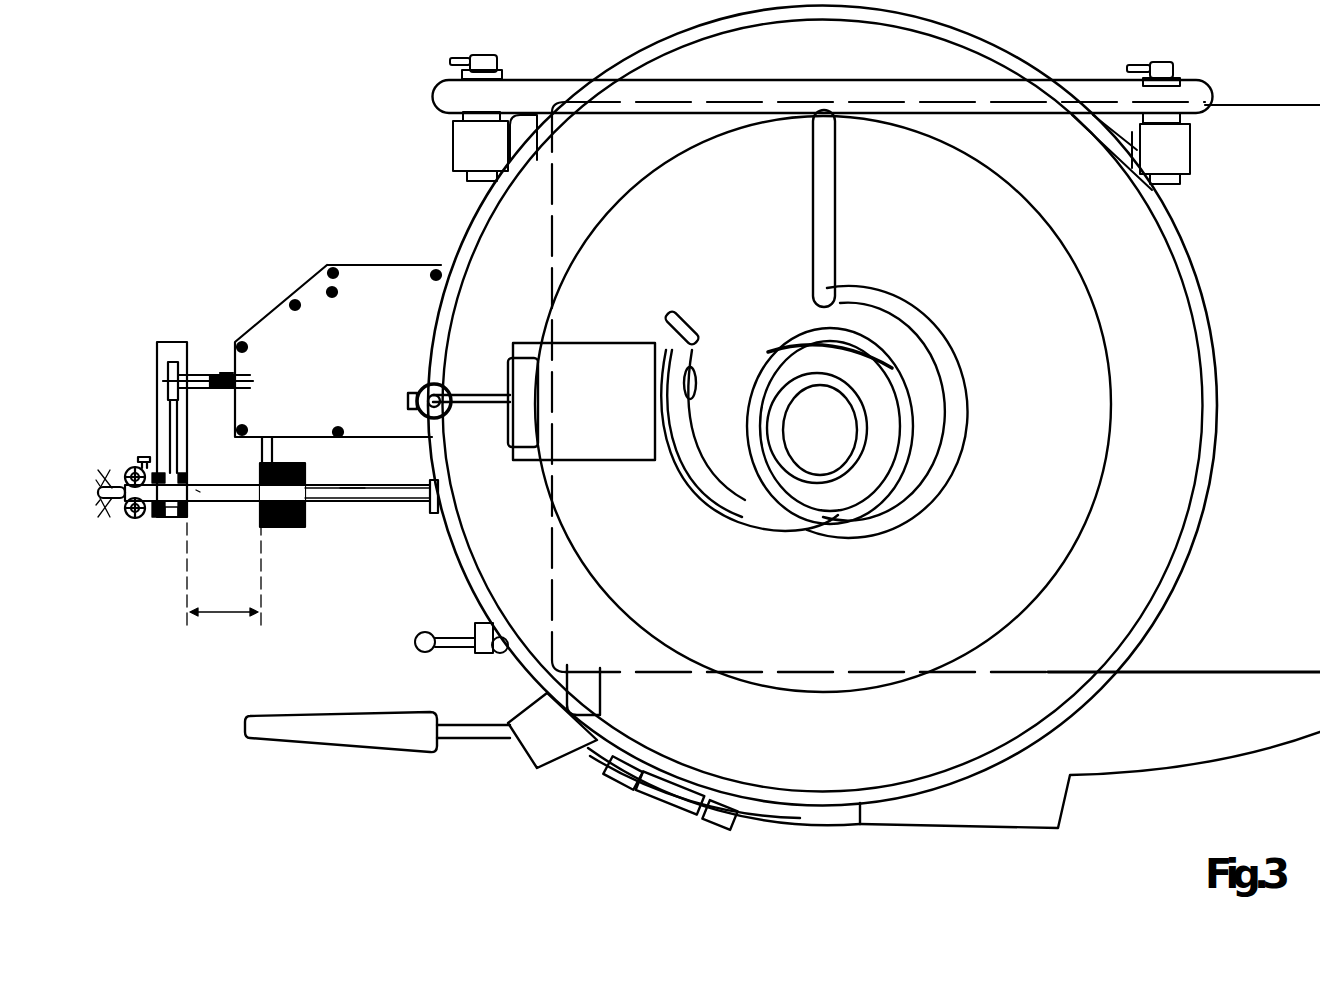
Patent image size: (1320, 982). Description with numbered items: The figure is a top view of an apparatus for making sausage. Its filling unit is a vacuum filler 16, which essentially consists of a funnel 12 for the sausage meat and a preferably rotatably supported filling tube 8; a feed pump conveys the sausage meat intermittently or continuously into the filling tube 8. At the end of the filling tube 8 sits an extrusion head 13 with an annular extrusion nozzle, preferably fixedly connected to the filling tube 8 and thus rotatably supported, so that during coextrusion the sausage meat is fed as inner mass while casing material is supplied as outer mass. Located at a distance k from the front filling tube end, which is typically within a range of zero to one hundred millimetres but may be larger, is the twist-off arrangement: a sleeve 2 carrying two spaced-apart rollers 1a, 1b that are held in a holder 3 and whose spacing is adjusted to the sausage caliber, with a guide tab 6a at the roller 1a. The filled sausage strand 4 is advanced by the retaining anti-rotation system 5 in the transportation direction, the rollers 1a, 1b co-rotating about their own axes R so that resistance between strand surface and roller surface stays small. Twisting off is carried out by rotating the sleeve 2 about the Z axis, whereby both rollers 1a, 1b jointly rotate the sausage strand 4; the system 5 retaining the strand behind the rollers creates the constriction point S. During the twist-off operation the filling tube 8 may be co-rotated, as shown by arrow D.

The roller 1a is at (128, 470).
The roller 1b is at (140, 518).
The roller guide tab 6a is at (140, 458).
The holder 3 is at (216, 442).
The sleeve 2 is at (168, 470).
The retaining anti-rotation system 5 is at (105, 510).
The constriction point S is at (122, 507).
The roller axis R is at (205, 478).
The filled sausage strand 4 is at (230, 497).
The extrusion head 13 is at (256, 505).
The distance k is at (224, 574).
The arrow D is at (350, 483).
The filling tube 8 is at (400, 503).
The vacuum filler 16 is at (515, 768).
The funnel 12 is at (797, 768).